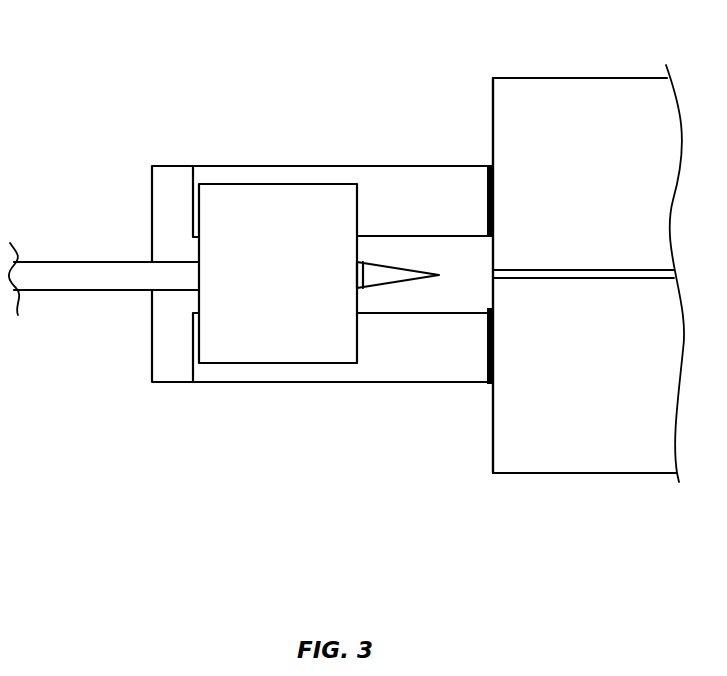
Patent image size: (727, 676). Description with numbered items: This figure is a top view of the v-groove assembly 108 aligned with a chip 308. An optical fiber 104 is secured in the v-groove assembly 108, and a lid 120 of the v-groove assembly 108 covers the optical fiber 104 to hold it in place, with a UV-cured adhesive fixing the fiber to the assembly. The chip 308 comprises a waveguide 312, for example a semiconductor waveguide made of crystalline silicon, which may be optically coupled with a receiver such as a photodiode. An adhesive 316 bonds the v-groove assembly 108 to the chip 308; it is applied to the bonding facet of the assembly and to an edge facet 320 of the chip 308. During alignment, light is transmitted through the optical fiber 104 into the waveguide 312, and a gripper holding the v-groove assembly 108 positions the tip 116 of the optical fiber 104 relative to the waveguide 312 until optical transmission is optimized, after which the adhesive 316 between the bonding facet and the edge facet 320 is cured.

The optical fiber 104 is at (58, 281).
The v-groove assembly 108 is at (165, 166).
The lid 120 is at (283, 208).
The tip 116 is at (402, 265).
The chip 308 is at (557, 80).
The edge facet 320 is at (493, 122).
The waveguide 312 is at (537, 272).
The adhesive 316 is at (490, 178).